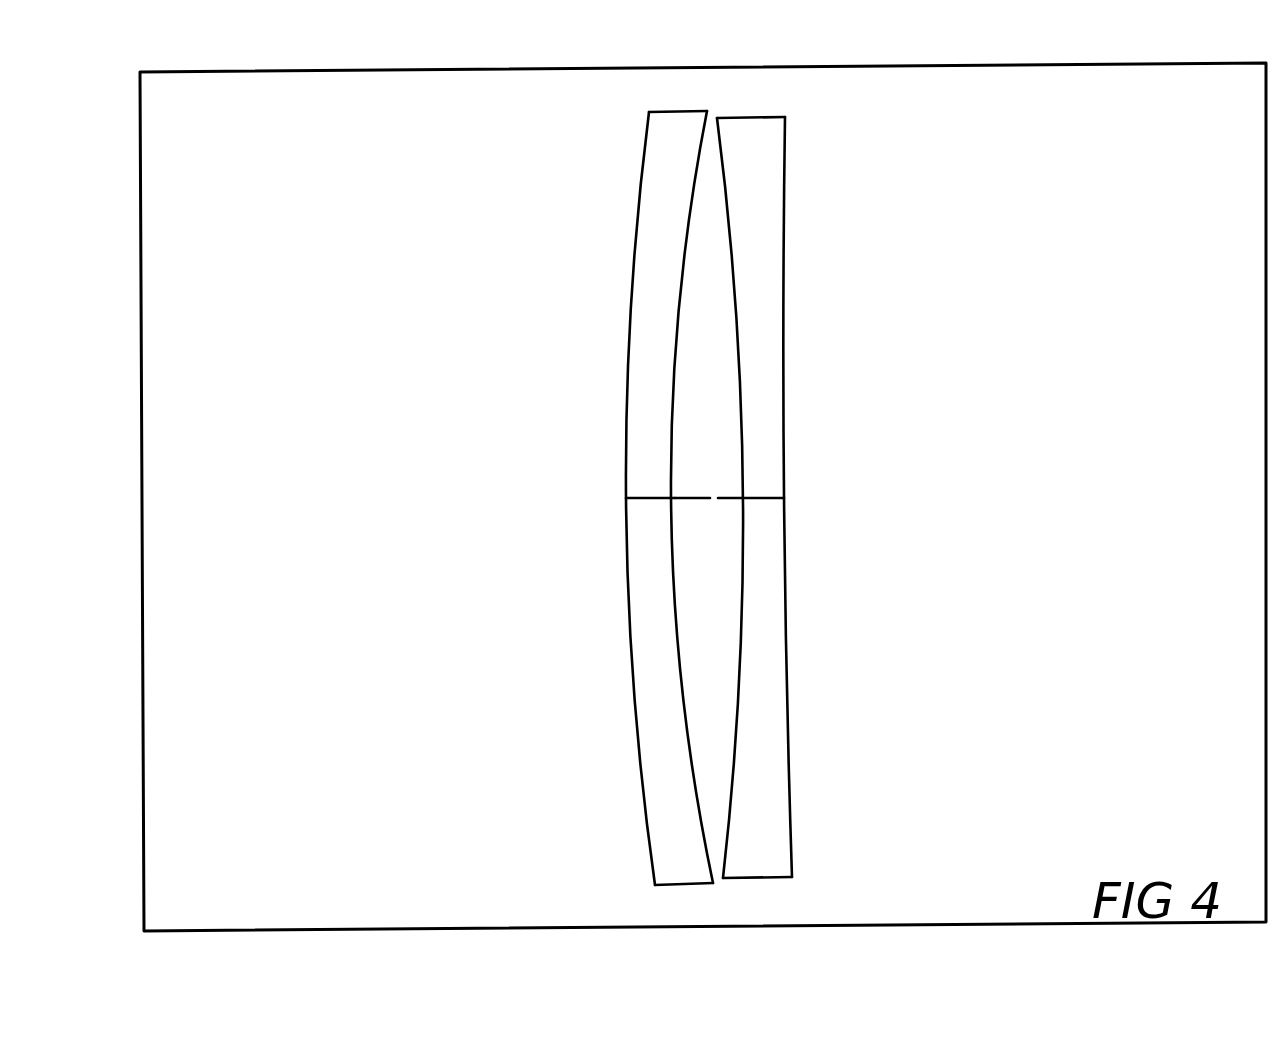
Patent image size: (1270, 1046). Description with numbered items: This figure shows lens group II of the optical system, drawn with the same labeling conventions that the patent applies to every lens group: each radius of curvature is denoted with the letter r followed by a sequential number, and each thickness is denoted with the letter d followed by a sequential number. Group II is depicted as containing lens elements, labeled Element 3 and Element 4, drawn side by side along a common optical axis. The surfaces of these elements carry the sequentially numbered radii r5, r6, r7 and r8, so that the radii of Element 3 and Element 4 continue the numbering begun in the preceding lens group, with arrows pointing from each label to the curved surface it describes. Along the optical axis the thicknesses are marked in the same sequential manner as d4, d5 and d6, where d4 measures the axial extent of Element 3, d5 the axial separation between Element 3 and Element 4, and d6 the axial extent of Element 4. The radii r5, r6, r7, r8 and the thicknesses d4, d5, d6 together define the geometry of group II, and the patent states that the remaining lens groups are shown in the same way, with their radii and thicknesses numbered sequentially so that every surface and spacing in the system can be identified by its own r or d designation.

The group II is at (242, 217).
The lens element 3 is at (518, 498).
The lens element 4 is at (908, 497).
The lens element radius r5 is at (642, 206).
The lens element radius r6 is at (679, 278).
The lens element radius r7 is at (765, 261).
The lens element radius r8 is at (815, 347).
The thickness d4 is at (648, 511).
The thickness d5 is at (747, 507).
The thickness d6 is at (791, 489).